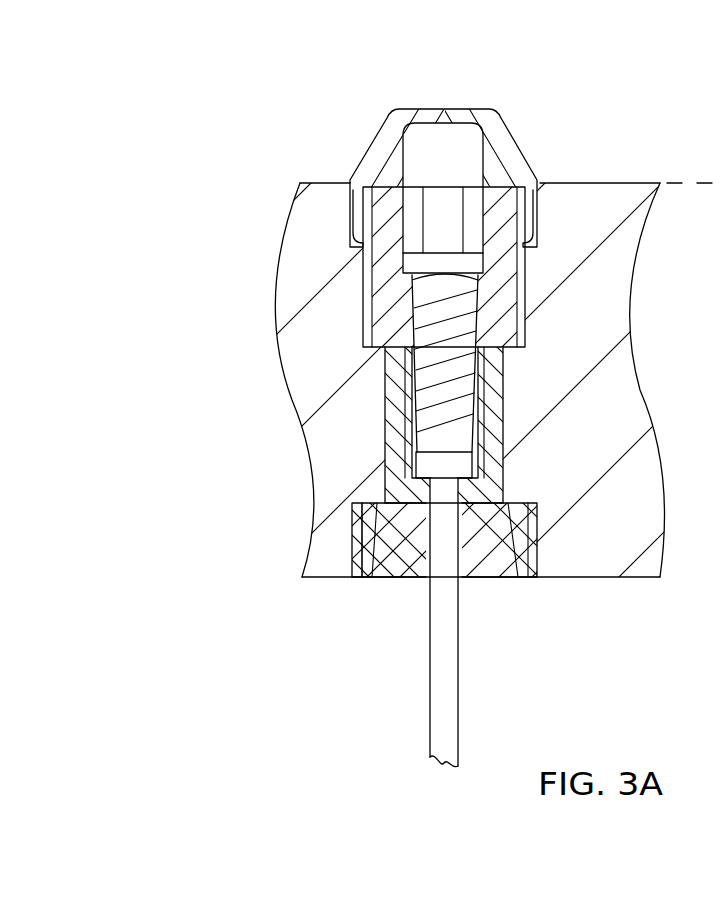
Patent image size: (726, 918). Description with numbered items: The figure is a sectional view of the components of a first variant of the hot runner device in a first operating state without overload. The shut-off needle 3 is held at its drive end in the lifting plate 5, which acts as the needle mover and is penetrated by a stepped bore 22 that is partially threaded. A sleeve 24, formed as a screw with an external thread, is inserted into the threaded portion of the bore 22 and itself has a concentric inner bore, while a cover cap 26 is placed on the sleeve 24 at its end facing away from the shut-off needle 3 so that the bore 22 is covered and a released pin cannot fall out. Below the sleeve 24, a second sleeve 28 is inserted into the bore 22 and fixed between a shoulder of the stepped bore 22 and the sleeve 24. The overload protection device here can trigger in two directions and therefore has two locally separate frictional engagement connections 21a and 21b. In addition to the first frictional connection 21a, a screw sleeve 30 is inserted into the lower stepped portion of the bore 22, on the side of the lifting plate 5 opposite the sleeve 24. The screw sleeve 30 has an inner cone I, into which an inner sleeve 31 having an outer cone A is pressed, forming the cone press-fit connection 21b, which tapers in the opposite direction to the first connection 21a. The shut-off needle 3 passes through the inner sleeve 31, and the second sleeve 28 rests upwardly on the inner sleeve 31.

The lifting plate 5 is at (627, 545).
The cover cap 26 is at (515, 160).
The sleeve 24 is at (497, 268).
The stepped bore 22 is at (385, 378).
The second sleeve 28 is at (388, 451).
The frictional engagement connection 21a is at (396, 313).
The frictional engagement connection 21b is at (356, 542).
The screw sleeve 30 is at (357, 565).
The inner sleeve 31 is at (497, 555).
The outer cone A is at (401, 546).
The inner cone I is at (356, 557).
The shut-off needle 3 is at (445, 693).